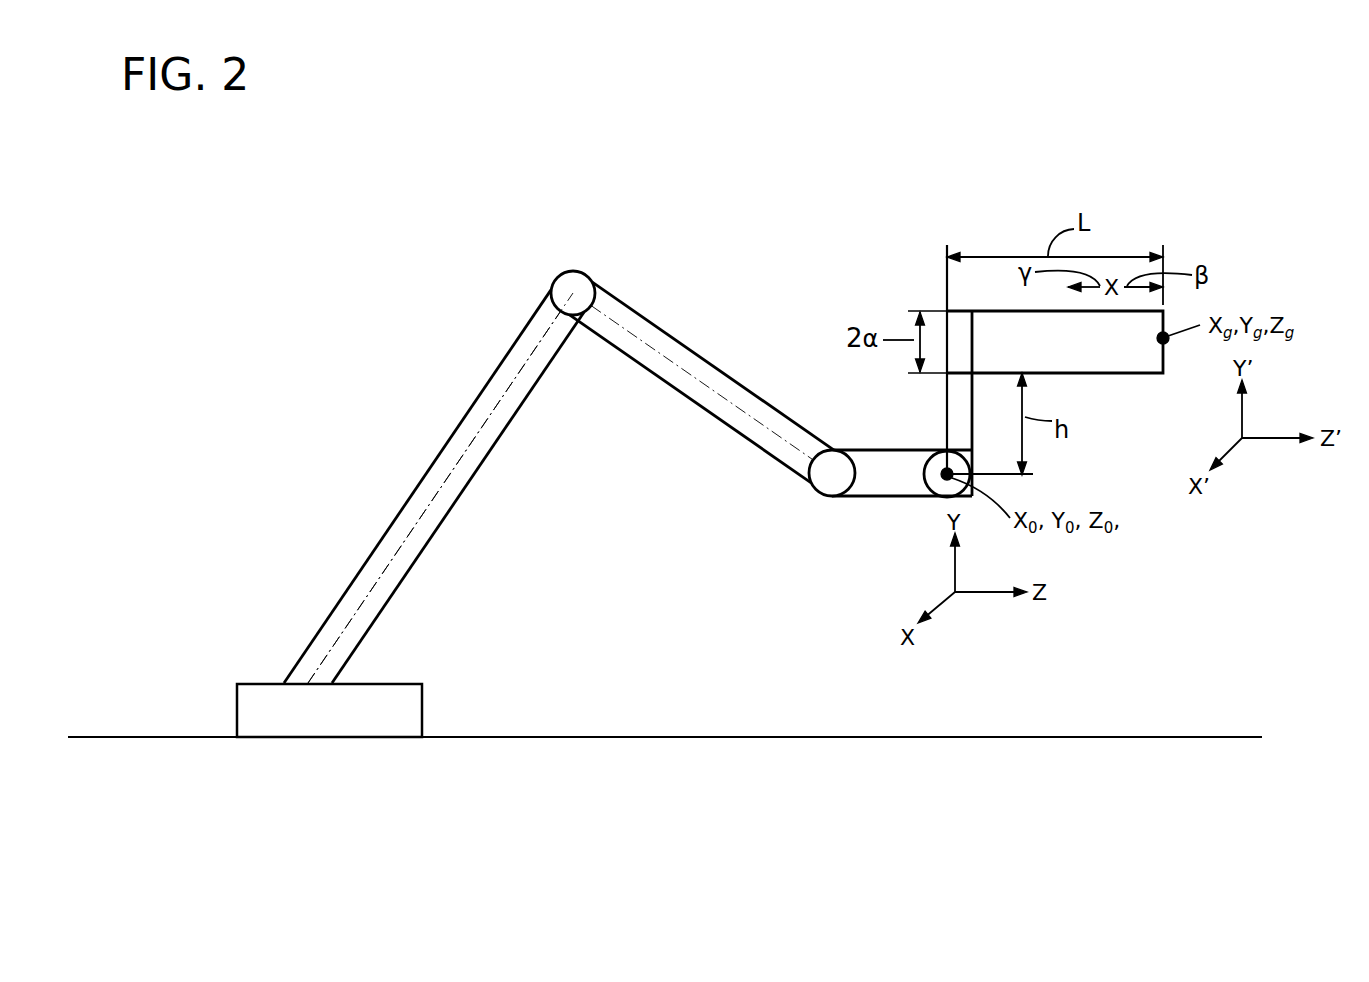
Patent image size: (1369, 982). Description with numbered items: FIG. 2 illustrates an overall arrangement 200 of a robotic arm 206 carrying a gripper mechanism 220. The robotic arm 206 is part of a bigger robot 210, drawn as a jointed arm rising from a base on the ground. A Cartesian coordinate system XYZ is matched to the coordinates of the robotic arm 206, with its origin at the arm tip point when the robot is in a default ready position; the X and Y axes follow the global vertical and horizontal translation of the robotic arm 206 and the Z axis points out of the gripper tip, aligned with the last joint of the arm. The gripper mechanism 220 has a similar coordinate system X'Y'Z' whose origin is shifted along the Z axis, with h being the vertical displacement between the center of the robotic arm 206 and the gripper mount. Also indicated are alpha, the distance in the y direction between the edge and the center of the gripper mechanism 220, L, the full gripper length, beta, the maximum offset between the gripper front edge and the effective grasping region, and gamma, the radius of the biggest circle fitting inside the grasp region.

The robotic arm system 200 is at (728, 195).
The robotic arm 206 is at (885, 498).
The robot 210 is at (438, 455).
The gripper mechanism 220 is at (1117, 362).